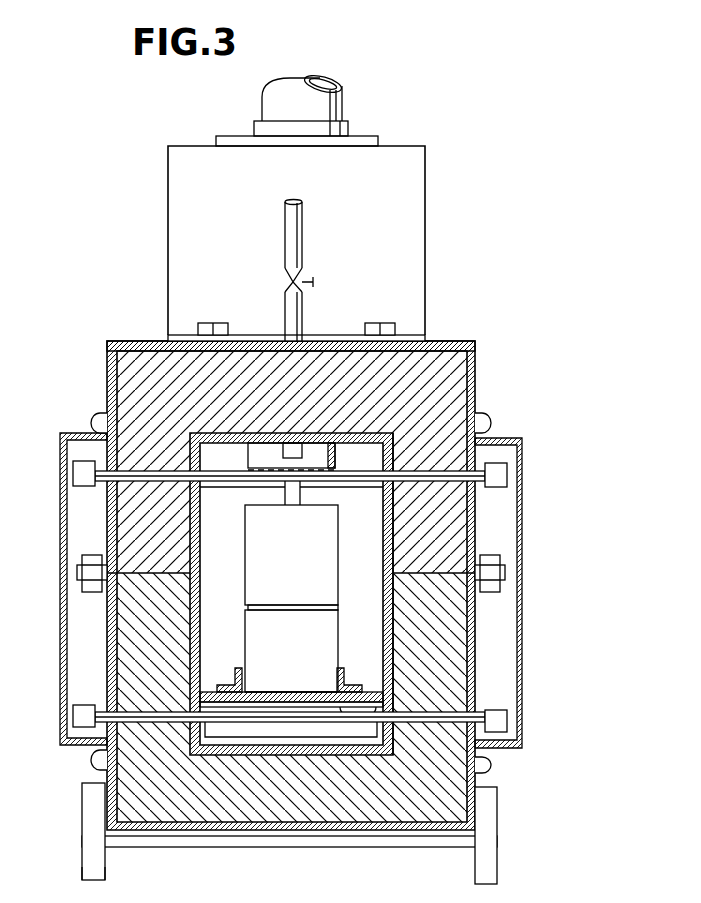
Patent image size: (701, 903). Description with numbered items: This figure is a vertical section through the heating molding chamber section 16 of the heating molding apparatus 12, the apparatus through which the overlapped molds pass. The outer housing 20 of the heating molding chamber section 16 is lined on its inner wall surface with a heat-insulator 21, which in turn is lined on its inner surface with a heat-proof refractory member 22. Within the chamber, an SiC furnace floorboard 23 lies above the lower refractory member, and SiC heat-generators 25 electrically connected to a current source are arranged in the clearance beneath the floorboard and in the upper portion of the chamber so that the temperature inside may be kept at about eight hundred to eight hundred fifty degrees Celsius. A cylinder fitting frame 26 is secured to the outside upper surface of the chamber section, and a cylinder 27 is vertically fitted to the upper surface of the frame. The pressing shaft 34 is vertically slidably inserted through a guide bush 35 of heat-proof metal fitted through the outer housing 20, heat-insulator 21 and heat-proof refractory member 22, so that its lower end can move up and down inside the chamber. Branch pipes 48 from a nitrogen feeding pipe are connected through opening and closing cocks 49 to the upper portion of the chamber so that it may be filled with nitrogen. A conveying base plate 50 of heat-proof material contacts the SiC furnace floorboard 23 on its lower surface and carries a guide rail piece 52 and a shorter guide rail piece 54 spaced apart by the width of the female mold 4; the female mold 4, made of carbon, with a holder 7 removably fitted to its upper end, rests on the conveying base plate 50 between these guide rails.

The female mold 4 is at (260, 622).
The holder 7 is at (250, 524).
The heating molding apparatus 12 is at (456, 344).
The heating molding chamber section 16 is at (190, 440).
The outer housing 20 is at (146, 349).
The heat-insulator 21 is at (147, 377).
The heat-proof refractory member 22 is at (396, 450).
The SiC furnace floorboard 23 is at (378, 704).
The SiC heat-generators 25 is at (442, 470).
The cylinder fitting frame 26 is at (400, 158).
The cylinder 27 is at (262, 103).
The pressing shaft 34 is at (300, 495).
The guide bush 35 is at (322, 440).
The branch pipes 48 is at (303, 304).
The opening and closing cocks 49 is at (310, 282).
The conveying base plate 50 is at (280, 690).
The guide rail piece 52 is at (233, 678).
The guide rail piece 54 is at (347, 690).